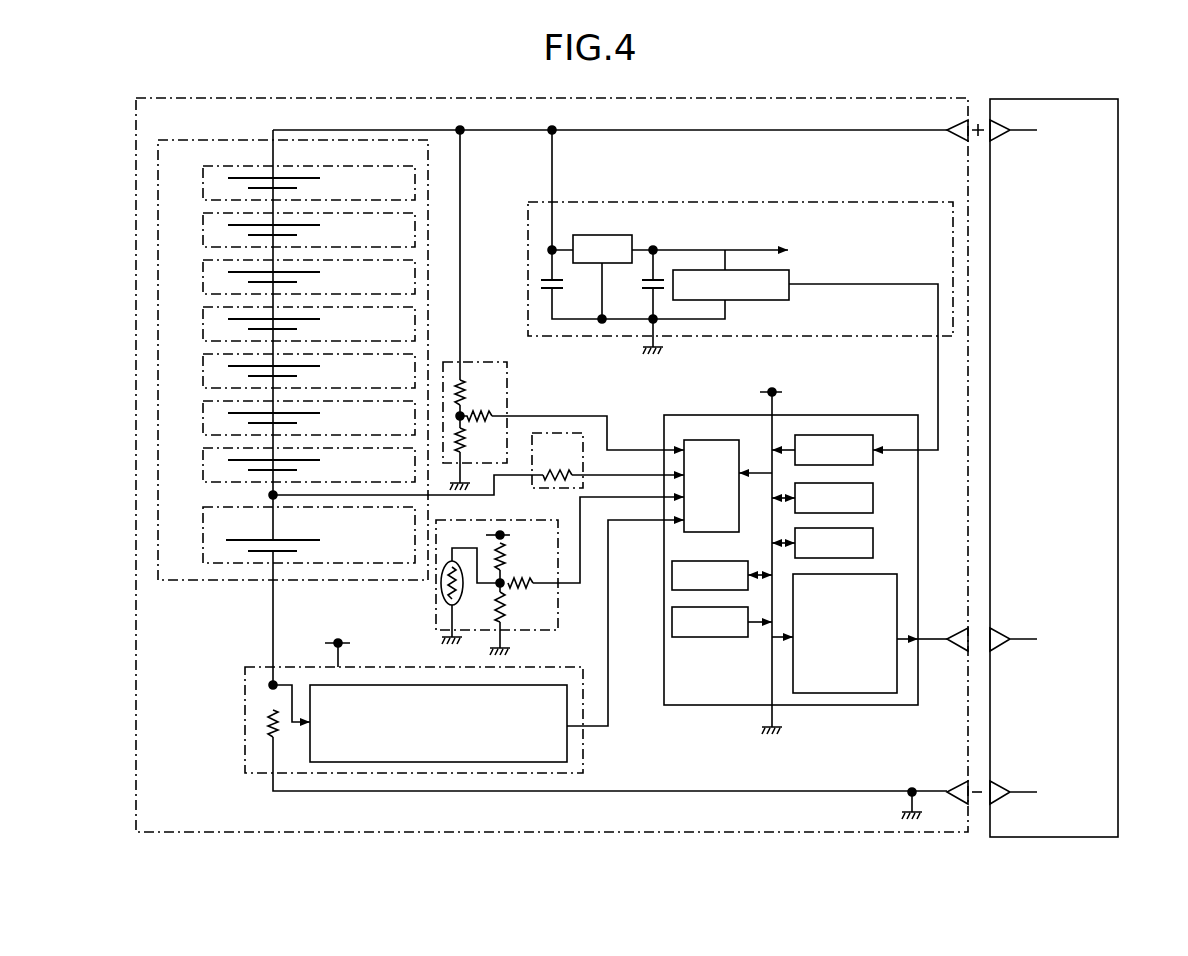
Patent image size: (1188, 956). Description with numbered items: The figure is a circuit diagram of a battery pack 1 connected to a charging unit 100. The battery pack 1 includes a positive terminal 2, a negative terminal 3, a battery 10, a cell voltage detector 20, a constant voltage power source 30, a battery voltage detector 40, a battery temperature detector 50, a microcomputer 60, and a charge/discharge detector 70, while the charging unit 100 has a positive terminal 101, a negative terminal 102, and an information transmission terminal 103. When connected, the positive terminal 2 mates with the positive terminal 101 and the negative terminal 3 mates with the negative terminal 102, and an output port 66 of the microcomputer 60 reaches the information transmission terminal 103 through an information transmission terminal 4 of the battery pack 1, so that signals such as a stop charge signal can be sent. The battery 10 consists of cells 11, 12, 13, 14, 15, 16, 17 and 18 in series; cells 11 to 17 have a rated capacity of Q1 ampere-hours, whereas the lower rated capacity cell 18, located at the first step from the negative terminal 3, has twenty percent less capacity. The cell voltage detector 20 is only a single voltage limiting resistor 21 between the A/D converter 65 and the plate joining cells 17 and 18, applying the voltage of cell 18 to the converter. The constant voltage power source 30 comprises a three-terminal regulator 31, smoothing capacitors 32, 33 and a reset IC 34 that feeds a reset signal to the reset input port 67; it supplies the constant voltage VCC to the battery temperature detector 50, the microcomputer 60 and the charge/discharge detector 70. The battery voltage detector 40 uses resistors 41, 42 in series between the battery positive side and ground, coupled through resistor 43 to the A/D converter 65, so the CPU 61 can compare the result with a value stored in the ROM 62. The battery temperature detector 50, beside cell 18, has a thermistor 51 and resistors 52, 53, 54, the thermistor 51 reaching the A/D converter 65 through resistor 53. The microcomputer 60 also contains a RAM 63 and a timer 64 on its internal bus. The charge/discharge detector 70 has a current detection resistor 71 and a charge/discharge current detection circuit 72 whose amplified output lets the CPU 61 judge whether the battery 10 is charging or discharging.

The battery pack 1 is at (136, 128).
The positive terminal 2 is at (953, 140).
The negative terminal 3 is at (952, 786).
The information transmission terminal 4 is at (949, 649).
The battery 10 is at (213, 134).
The cell 11 is at (203, 175).
The cell 12 is at (203, 222).
The cell 13 is at (203, 269).
The cell 14 is at (203, 316).
The cell 15 is at (203, 363).
The cell 16 is at (203, 410).
The cell 17 is at (203, 457).
The lower rated capacity cell 18 is at (203, 507).
The cell voltage detector 20 is at (548, 488).
The resistor 21 is at (555, 472).
The constant voltage power source 30 is at (725, 202).
The three-terminal regulator 31 is at (632, 240).
The smoothing capacitor 32 is at (563, 286).
The smoothing capacitor 33 is at (643, 286).
The reset IC 34 is at (765, 300).
The battery voltage detector 40 is at (478, 362).
The resistor 41 is at (464, 392).
The resistor 42 is at (463, 435).
The resistor 43 is at (478, 414).
The battery temperature detector 50 is at (436, 615).
The thermistor 51 is at (457, 600).
The resistor 52 is at (505, 551).
The resistor 53 is at (522, 579).
The resistor 54 is at (506, 610).
The microcomputer 60 is at (877, 415).
The central processing unit 61 is at (672, 575).
The read-only memory 62 is at (672, 622).
The random access memory 63 is at (873, 497).
The timer 64 is at (873, 540).
The A/D converter 65 is at (690, 440).
The output port 66 is at (897, 590).
The reset input port 67 is at (873, 462).
The charge/discharge detector 70 is at (245, 685).
The current detection resistor 71 is at (268, 728).
The charge/discharge current detection circuit 72 is at (567, 747).
The charging unit 100 is at (1118, 130).
The positive terminal 101 is at (1000, 141).
The negative terminal 102 is at (1005, 802).
The information transmission terminal 103 is at (1005, 649).